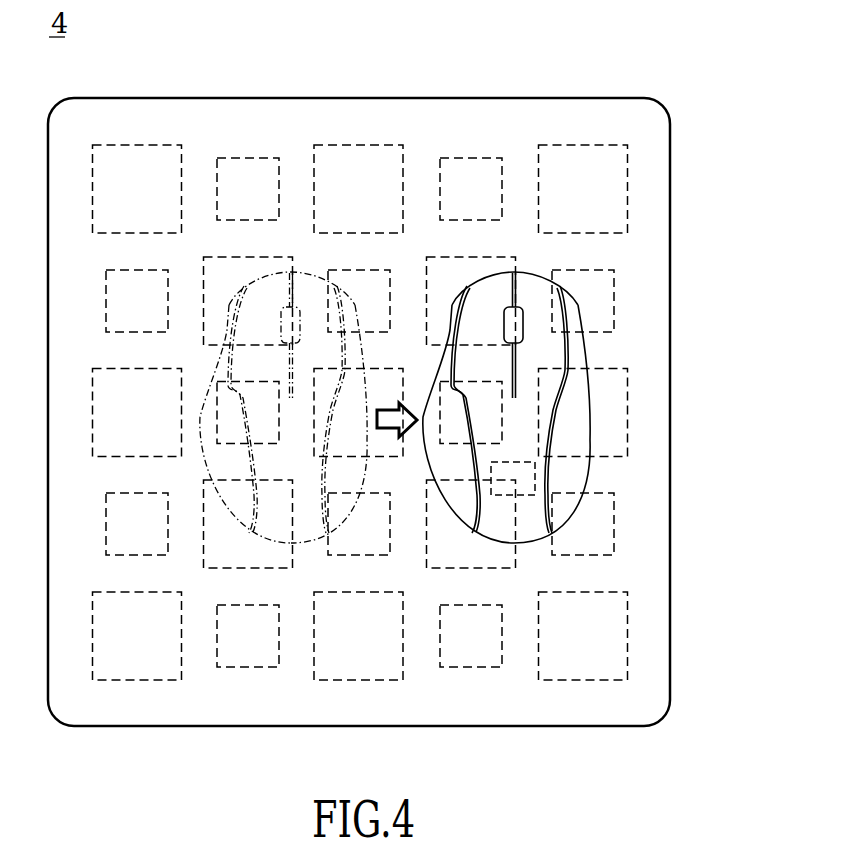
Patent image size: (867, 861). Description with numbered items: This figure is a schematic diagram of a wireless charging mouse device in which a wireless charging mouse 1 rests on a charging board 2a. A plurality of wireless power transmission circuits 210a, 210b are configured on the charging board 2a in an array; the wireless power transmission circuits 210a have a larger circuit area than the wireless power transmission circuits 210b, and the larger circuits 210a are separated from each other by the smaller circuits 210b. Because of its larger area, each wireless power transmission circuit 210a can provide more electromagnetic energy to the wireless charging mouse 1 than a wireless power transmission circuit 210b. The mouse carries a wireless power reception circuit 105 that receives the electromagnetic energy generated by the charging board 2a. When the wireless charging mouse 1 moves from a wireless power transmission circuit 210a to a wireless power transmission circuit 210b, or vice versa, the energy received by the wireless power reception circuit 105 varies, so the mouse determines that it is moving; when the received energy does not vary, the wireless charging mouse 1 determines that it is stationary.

The charging board 2a is at (637, 253).
The wireless power transmission circuit 210a is at (586, 157).
The wireless power transmission circuit 210b is at (473, 168).
The wireless charging mouse 1 is at (540, 428).
The wireless power reception circuit 105 is at (512, 485).